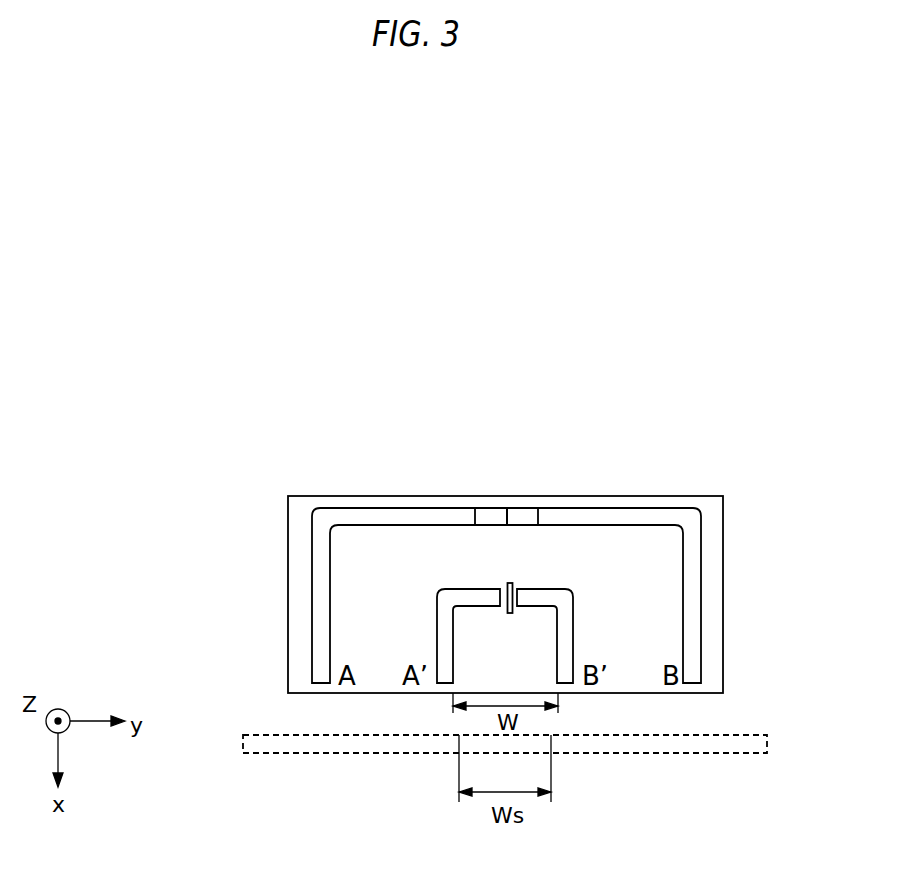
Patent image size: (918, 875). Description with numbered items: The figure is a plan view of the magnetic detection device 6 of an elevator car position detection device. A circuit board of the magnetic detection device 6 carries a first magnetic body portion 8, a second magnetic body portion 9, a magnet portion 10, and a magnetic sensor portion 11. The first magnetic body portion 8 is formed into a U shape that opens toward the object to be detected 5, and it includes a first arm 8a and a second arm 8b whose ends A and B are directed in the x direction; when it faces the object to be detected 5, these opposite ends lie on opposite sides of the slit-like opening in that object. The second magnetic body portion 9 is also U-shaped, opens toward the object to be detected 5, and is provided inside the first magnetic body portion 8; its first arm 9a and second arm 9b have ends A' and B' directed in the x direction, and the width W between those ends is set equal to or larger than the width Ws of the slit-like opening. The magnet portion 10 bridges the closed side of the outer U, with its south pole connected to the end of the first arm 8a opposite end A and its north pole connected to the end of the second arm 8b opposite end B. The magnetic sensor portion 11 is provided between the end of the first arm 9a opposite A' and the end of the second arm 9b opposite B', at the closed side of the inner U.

The object to be detected 5 is at (752, 735).
The magnetic detection device 6 is at (336, 496).
The first magnetic body portion 8 is at (506, 500).
The first arm 8a is at (445, 508).
The second arm 8b is at (604, 533).
The second magnetic body portion 9 is at (369, 608).
The first arm 9a is at (445, 653).
The second arm 9b is at (568, 663).
The magnet portion 10 is at (518, 508).
The magnetic sensor portion 11 is at (505, 588).